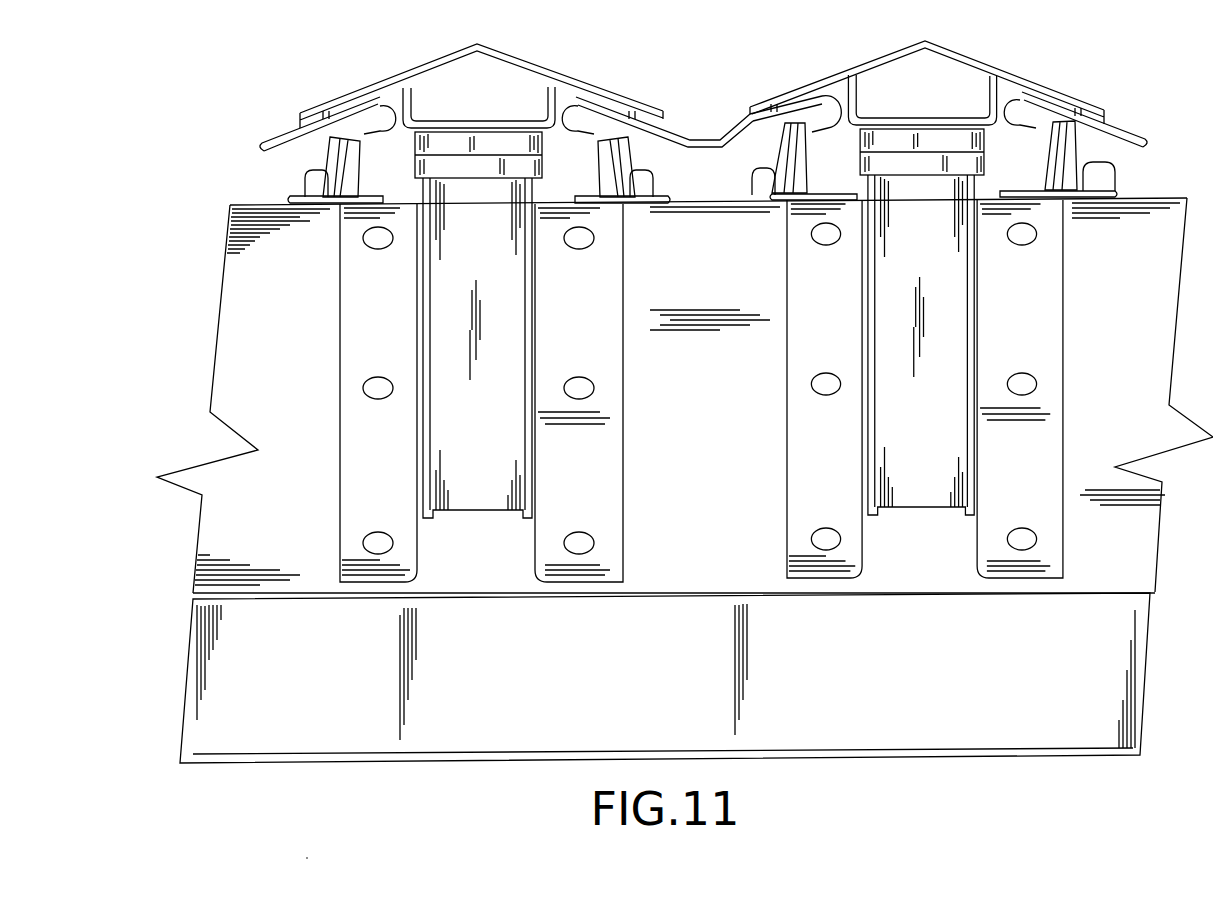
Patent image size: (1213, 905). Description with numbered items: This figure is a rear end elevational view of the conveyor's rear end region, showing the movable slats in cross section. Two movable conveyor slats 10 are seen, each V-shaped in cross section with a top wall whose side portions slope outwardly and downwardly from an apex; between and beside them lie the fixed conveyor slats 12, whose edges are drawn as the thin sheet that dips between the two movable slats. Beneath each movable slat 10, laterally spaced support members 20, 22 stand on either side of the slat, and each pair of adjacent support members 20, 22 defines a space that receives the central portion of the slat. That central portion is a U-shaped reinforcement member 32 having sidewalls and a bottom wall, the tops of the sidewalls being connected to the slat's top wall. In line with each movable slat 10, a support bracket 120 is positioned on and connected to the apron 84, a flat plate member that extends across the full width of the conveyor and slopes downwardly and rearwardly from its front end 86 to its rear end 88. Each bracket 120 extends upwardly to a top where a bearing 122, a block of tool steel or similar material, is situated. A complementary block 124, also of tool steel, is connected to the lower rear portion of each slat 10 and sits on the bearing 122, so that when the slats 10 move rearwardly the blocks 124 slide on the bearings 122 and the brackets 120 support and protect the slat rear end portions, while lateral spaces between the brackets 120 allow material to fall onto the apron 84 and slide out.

The movable conveyor slat 10 is at (383, 80).
The fixed conveyor slat 12 is at (282, 134).
The support member 20 is at (653, 197).
The support member 22 is at (310, 203).
The U-shaped reinforcement member 32 is at (412, 98).
The apron 84 is at (240, 300).
The front end 86 is at (232, 205).
The rear end 88 is at (893, 720).
The support bracket 120 is at (458, 432).
The bearing 122 is at (490, 175).
The complementary block 124 is at (506, 140).